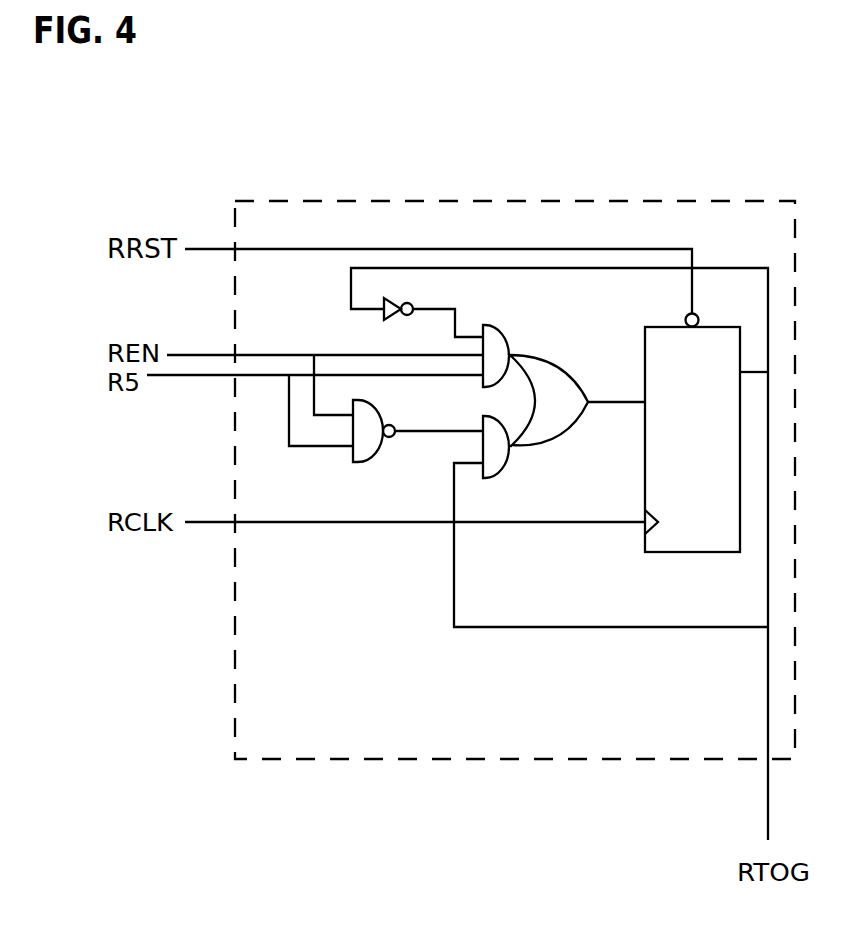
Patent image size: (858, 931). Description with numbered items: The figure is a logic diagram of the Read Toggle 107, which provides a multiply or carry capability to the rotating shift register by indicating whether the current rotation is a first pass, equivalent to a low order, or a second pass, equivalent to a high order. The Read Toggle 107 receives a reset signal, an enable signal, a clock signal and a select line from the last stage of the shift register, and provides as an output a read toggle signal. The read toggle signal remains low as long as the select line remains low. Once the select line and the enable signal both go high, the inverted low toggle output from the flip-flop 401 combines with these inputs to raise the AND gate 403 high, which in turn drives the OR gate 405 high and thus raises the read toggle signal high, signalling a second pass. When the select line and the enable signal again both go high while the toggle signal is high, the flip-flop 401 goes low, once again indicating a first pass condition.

The Read Toggle 107 is at (515, 480).
The flip-flop 401 is at (706, 439).
The AND gate 403 is at (507, 330).
The OR gate 405 is at (577, 400).